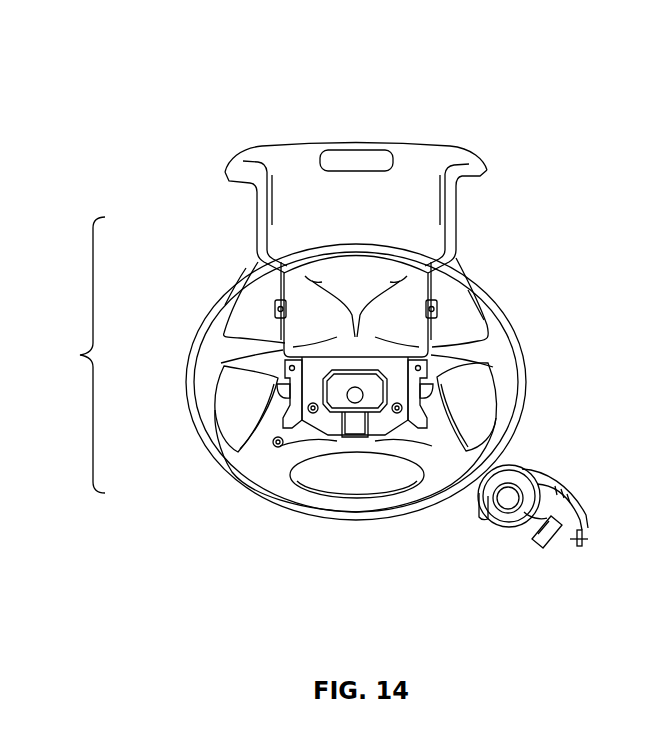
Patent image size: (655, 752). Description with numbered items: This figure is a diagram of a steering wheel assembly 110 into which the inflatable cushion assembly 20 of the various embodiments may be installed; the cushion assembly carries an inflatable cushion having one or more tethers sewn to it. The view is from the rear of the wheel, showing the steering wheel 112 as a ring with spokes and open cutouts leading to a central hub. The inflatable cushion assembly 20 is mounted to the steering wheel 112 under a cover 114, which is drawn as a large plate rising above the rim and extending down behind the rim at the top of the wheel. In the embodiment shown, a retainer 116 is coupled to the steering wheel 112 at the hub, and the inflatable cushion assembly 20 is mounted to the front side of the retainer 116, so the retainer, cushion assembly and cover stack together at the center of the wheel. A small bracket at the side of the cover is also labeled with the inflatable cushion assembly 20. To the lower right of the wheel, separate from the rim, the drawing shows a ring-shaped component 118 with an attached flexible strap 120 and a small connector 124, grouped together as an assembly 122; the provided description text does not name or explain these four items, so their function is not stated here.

The steering wheel assembly 110 is at (163, 426).
The steering wheel 112 is at (487, 297).
The cover 114 is at (432, 201).
The retainer 116 is at (320, 420).
The inflatable cushion assembly 20 is at (281, 312).
The clock spring 118 is at (527, 465).
The flat cable strap 120 is at (584, 466).
The clock spring assembly 122 is at (568, 602).
The electrical connector 124 is at (533, 548).